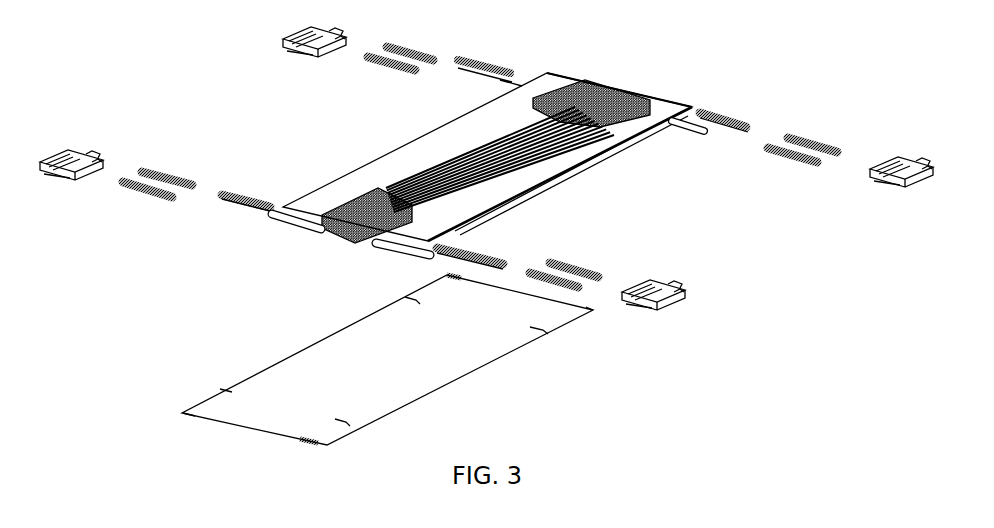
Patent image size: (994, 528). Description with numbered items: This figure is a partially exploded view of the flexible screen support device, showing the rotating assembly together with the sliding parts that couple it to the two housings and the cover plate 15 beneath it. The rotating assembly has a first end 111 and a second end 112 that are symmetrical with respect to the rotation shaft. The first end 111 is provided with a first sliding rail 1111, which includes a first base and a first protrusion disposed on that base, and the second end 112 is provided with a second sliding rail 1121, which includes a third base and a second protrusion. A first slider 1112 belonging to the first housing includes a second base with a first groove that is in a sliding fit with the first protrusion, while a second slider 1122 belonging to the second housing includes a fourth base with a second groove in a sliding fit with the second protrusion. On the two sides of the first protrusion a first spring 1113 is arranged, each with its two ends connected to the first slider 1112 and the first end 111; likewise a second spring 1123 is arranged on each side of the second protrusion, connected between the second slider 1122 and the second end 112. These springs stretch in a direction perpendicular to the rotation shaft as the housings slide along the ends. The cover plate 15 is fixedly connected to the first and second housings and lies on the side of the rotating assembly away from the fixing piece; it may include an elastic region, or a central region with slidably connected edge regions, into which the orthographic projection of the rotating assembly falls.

The first end 111 is at (395, 152).
The first sliding rail 1111 is at (265, 203).
The first slider 1112 is at (88, 158).
The first spring 1113 is at (171, 173).
The second end 112 is at (563, 192).
The second sliding rail 1121 is at (483, 253).
The second slider 1122 is at (668, 288).
The second spring 1123 is at (597, 258).
The cover plate 15 is at (490, 337).